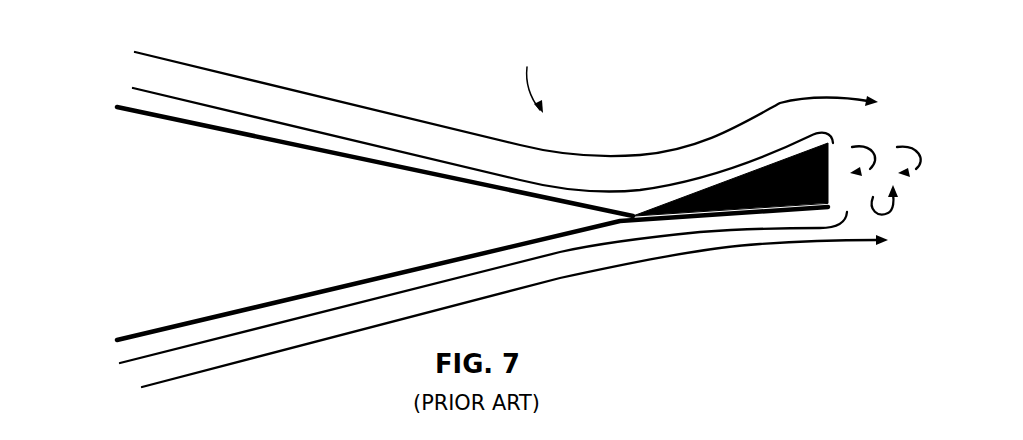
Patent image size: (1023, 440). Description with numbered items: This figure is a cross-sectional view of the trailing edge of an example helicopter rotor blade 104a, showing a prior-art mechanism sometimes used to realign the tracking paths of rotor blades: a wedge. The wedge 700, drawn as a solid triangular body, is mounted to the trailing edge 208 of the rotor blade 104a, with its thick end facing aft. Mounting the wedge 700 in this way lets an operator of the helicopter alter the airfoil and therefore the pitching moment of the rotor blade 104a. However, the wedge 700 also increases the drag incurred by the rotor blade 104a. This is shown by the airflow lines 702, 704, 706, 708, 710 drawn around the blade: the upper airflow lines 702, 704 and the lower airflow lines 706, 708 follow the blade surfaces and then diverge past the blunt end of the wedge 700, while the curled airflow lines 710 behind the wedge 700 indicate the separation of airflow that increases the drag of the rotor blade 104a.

The airflow line 702 is at (165, 60).
The airflow line 704 is at (133, 88).
The rotor blade 104a is at (420, 173).
The trailing edge 208 is at (525, 78).
The wedge 700 is at (733, 177).
The airflow line 706 is at (128, 363).
The airflow line 708 is at (210, 368).
The airflow line 710 is at (946, 222).